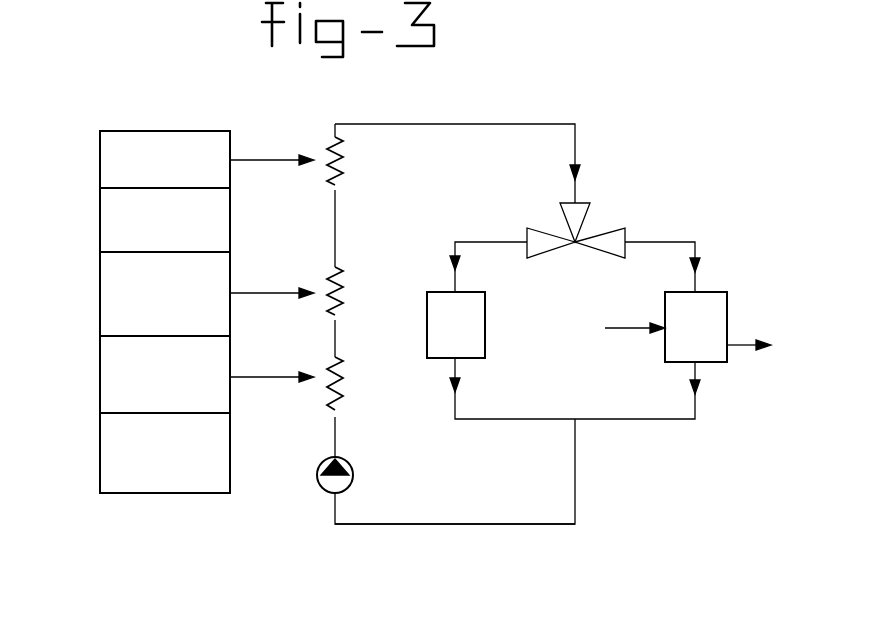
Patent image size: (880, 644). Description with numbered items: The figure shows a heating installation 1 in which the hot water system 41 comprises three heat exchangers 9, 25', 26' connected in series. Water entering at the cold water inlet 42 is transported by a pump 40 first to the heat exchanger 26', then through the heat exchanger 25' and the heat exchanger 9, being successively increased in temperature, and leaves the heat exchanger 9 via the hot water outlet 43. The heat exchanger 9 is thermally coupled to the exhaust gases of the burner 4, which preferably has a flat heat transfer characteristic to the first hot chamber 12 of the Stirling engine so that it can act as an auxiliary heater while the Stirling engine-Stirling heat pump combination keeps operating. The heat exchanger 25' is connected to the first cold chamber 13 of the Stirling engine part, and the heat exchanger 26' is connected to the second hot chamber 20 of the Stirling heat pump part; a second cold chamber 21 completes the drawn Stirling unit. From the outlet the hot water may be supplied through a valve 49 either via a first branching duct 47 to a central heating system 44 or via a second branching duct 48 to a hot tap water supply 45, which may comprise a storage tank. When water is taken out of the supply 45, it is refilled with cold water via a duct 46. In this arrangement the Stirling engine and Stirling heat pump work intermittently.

The heating and cooling circuit 1 is at (596, 186).
The burner 4 is at (118, 155).
The first hot chamber 12 is at (118, 220).
The first cold chamber 13 is at (122, 300).
The second hot chamber 20 is at (125, 380).
The second cooling stage C2 21 is at (125, 447).
The heat exchanger 9 is at (344, 176).
The heat exchanger 25' is at (365, 290).
The heat exchanger 26' is at (370, 380).
The pump 40 is at (353, 476).
The hot water outlet 43 is at (460, 123).
The valve 49 is at (585, 222).
The first branching duct 47 is at (455, 242).
The second branching duct 48 is at (696, 250).
The central heating system 44 is at (470, 312).
The hot tap water supply 45 is at (710, 310).
The duct 46 is at (648, 328).
The hot water system 41 is at (588, 430).
The cold water inlet 42 is at (495, 525).